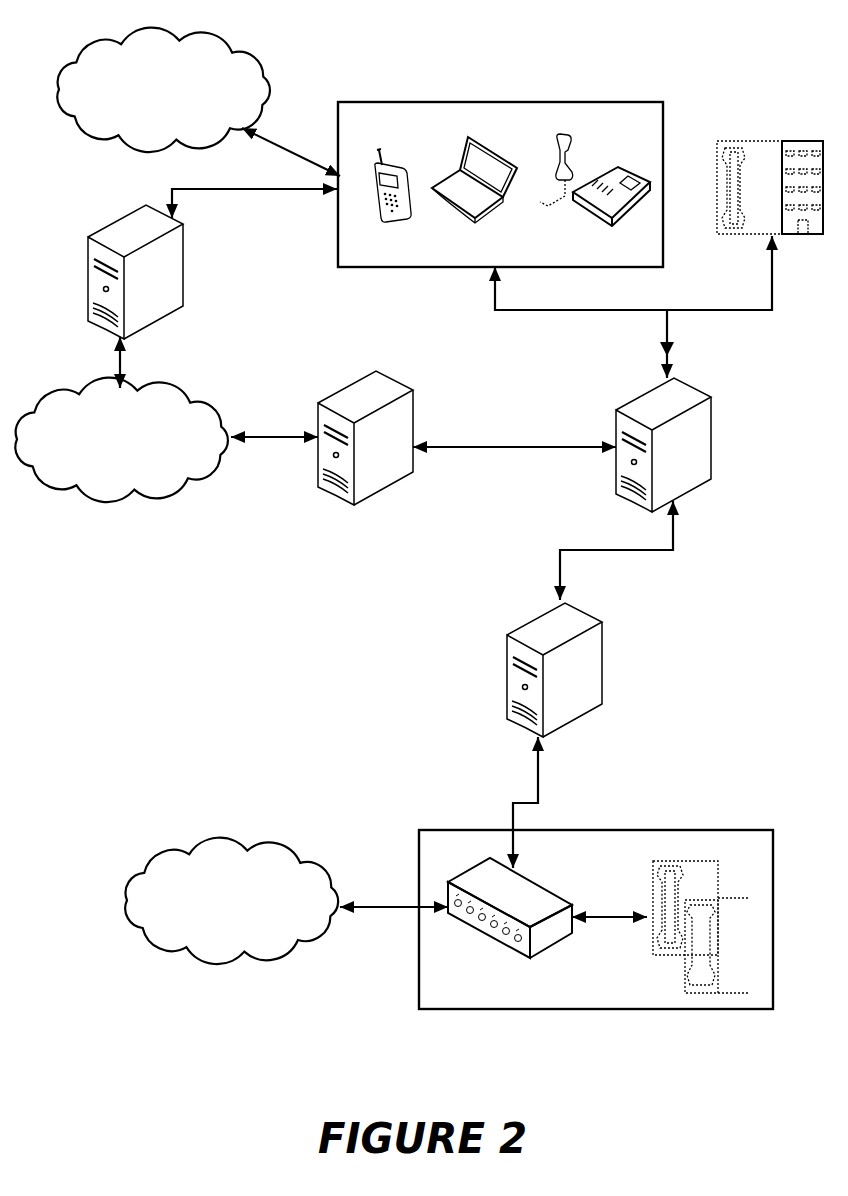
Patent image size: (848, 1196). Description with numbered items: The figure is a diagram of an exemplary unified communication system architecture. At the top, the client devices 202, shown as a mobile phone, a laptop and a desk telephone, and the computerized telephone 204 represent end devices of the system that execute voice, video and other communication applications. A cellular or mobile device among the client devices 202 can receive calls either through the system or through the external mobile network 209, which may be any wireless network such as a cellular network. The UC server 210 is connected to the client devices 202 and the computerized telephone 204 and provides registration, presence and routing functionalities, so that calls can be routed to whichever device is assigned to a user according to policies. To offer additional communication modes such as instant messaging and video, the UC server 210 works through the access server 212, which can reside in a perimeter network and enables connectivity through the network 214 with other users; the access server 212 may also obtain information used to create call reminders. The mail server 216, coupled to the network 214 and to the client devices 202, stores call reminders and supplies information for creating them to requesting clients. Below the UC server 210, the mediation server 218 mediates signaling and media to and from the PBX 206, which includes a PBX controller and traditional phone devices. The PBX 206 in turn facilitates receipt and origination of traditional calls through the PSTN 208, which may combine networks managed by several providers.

The client devices 202 is at (443, 110).
The computerized telephone 204 is at (768, 143).
The PBX 206 is at (447, 828).
The Public Switched Telephone Network (PSTN) 208 is at (150, 867).
The mobile network 209 is at (147, 40).
The UC server 210 is at (633, 397).
The access server 212 is at (343, 388).
The network 214 is at (102, 388).
The mail server 216 is at (95, 232).
The mediation server 218 is at (523, 627).